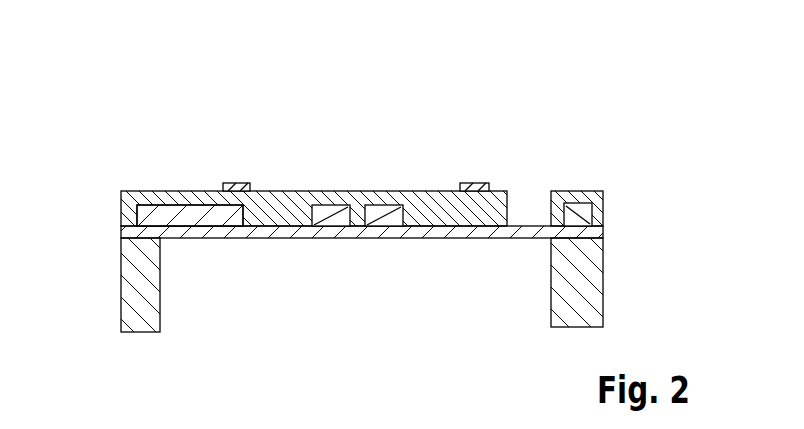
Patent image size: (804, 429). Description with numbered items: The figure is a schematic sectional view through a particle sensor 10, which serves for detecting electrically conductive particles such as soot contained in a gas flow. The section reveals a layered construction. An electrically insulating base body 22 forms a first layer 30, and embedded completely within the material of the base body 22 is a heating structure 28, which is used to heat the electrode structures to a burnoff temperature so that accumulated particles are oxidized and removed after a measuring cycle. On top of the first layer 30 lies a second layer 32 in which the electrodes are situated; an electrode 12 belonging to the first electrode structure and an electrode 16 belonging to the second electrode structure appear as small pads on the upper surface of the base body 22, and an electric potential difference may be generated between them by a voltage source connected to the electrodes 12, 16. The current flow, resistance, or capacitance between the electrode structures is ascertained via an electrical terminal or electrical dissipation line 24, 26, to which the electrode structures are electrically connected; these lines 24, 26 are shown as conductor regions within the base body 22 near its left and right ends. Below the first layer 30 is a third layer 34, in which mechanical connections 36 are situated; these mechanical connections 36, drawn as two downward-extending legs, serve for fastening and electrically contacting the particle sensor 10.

The particle sensor 10 is at (650, 90).
The electrode 12 is at (232, 187).
The electrode 16 is at (472, 185).
The base body 22 is at (428, 200).
The electrical dissipation line 24 is at (160, 216).
The electrical dissipation line 26 is at (573, 210).
The heating structure 28 is at (338, 205).
The first layer 30 is at (620, 191).
The second layer 32 is at (620, 175).
The third layer 34 is at (620, 238).
The mechanical connections 36 is at (143, 303).